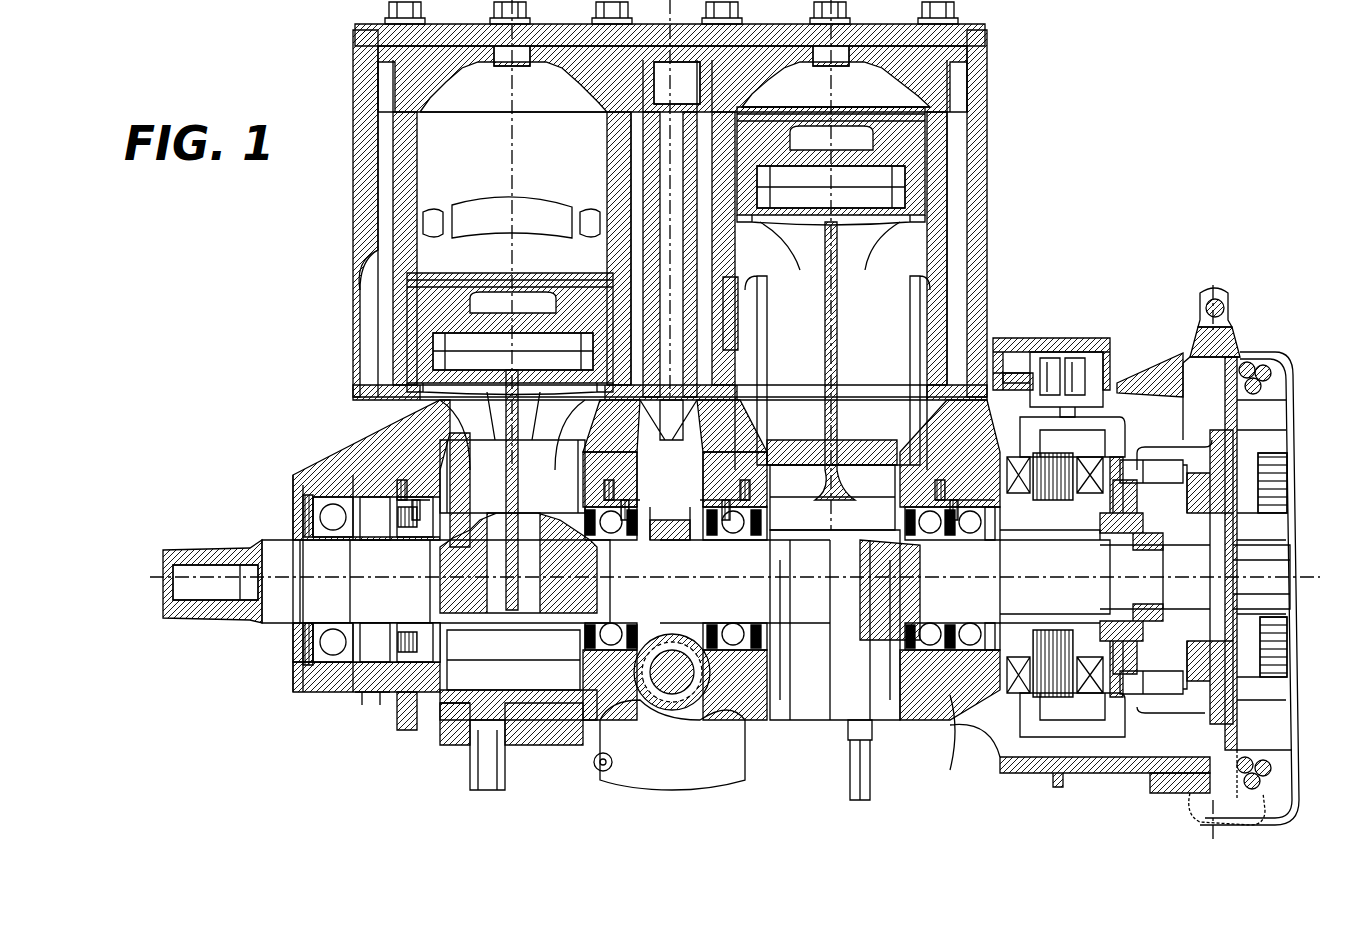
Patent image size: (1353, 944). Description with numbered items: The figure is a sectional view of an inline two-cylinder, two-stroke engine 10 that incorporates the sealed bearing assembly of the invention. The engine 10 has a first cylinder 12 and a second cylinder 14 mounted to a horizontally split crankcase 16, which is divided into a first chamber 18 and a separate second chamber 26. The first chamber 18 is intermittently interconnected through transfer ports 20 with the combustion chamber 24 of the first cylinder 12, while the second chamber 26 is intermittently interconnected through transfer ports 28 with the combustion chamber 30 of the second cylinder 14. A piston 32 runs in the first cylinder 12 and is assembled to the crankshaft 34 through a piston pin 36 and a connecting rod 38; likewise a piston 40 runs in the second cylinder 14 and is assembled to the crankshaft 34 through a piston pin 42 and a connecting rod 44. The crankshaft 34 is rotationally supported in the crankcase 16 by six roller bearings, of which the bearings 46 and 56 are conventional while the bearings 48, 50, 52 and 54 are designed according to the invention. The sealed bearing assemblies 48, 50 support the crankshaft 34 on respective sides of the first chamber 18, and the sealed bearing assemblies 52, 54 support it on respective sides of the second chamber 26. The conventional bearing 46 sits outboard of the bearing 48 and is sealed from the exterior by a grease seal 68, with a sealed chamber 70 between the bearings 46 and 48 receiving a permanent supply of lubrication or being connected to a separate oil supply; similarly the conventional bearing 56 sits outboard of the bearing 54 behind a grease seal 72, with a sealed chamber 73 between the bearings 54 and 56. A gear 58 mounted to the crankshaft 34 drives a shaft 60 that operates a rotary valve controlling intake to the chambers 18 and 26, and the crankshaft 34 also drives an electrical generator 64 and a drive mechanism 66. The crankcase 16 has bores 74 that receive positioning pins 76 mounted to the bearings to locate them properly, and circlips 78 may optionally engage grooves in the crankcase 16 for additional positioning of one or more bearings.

The engine 10 is at (1030, 212).
The first cylinder 12 is at (362, 262).
The second cylinder 14 is at (975, 268).
The crankcase 16 is at (378, 445).
The first chamber 18 is at (560, 720).
The transfer ports 20 is at (411, 382).
The combustion chamber 24 is at (503, 96).
The second chamber 26 is at (835, 740).
The transfer ports 28 is at (731, 382).
The combustion chamber 30 is at (865, 92).
The piston 32 is at (418, 300).
The crankshaft 34 is at (391, 572).
The piston pin 36 is at (433, 350).
The connecting rod 38 is at (510, 730).
The piston 40 is at (905, 140).
The piston pin 42 is at (889, 154).
The connecting rod 44 is at (838, 345).
The roller bearing 46 is at (318, 680).
The sealed bearing assembly 48 is at (428, 692).
The sealed bearing assembly 50 is at (590, 720).
The sealed bearing assembly 52 is at (745, 700).
The sealed bearing assembly 54 is at (905, 695).
The roller bearing 56 is at (985, 715).
The gear 58 is at (672, 520).
The driving shaft 60 is at (690, 708).
The electrical generator 64 is at (1132, 748).
The drive mechanism 66 is at (1292, 791).
The grease seal 68 is at (298, 665).
The sealed chamber 70 is at (391, 529).
The grease seal 72 is at (1005, 740).
The sealed chamber 73 is at (950, 715).
The bores 74 is at (402, 480).
The positioning pins 76 is at (416, 500).
The circlips 78 is at (378, 692).